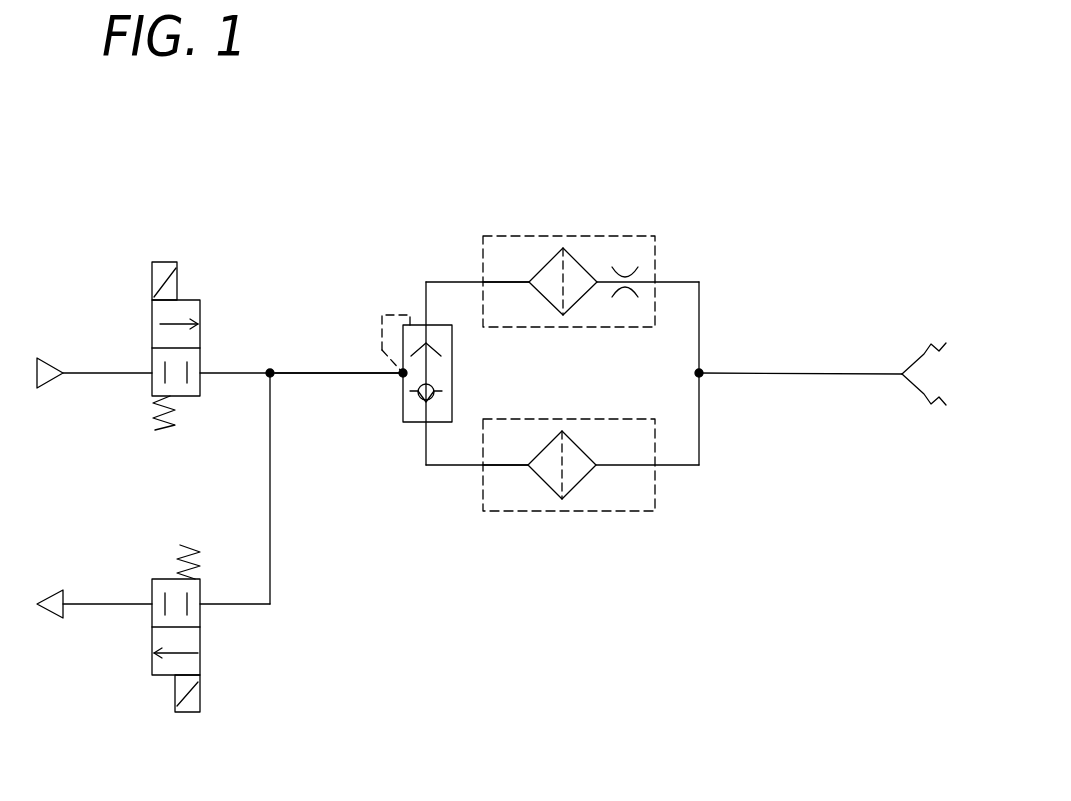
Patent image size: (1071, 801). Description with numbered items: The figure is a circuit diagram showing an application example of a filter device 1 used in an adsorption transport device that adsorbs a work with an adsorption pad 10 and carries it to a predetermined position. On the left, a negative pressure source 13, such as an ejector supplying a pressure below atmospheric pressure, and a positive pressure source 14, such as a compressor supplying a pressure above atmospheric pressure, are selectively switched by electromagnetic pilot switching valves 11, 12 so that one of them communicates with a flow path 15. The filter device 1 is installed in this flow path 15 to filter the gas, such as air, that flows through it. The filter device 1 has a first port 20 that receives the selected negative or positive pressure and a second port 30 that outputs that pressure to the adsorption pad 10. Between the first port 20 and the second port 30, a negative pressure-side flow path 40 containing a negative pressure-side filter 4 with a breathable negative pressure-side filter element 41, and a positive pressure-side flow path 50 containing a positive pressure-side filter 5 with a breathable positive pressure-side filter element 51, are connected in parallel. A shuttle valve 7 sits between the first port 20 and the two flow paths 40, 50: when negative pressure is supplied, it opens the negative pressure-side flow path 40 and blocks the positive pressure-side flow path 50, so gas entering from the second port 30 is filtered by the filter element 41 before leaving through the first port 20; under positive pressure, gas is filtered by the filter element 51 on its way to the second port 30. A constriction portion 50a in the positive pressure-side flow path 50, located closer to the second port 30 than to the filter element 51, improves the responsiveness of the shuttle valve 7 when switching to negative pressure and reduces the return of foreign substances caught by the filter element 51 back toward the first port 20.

The filter device 1 is at (750, 198).
The negative pressure-side filter 4 is at (585, 512).
The positive pressure-side filter 5 is at (588, 236).
The shuttle valve 7 is at (401, 425).
The adsorption pad 10 is at (912, 360).
The electromagnetic pilot switching valve 11 is at (200, 662).
The electromagnetic pilot switching valve 12 is at (188, 300).
The negative pressure source 13 is at (52, 619).
The positive pressure source 14 is at (50, 389).
The flow path 15 is at (308, 372).
The first port 20 is at (401, 376).
The second port 30 is at (701, 371).
The negative pressure-side flow path 40 is at (507, 467).
The negative pressure-side filter element 41 is at (548, 484).
The positive pressure-side flow path 50 is at (509, 280).
The constriction portion 50a is at (627, 277).
The positive pressure-side filter element 51 is at (548, 267).